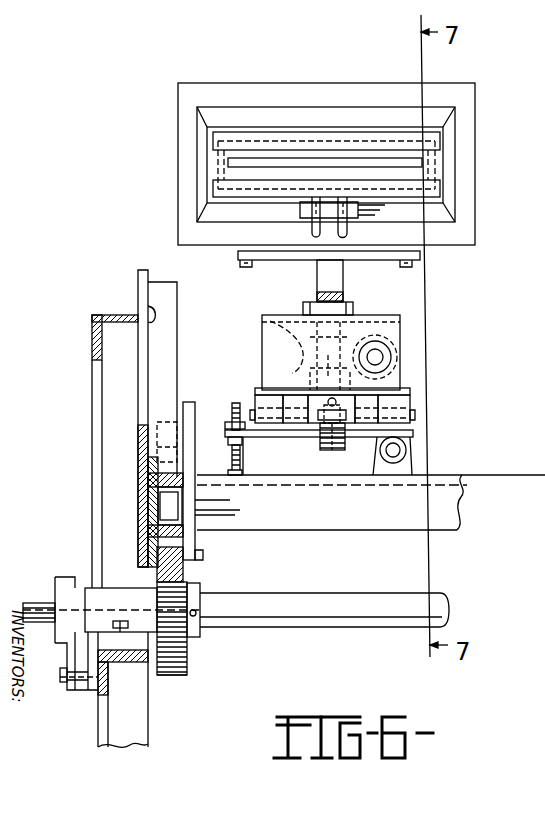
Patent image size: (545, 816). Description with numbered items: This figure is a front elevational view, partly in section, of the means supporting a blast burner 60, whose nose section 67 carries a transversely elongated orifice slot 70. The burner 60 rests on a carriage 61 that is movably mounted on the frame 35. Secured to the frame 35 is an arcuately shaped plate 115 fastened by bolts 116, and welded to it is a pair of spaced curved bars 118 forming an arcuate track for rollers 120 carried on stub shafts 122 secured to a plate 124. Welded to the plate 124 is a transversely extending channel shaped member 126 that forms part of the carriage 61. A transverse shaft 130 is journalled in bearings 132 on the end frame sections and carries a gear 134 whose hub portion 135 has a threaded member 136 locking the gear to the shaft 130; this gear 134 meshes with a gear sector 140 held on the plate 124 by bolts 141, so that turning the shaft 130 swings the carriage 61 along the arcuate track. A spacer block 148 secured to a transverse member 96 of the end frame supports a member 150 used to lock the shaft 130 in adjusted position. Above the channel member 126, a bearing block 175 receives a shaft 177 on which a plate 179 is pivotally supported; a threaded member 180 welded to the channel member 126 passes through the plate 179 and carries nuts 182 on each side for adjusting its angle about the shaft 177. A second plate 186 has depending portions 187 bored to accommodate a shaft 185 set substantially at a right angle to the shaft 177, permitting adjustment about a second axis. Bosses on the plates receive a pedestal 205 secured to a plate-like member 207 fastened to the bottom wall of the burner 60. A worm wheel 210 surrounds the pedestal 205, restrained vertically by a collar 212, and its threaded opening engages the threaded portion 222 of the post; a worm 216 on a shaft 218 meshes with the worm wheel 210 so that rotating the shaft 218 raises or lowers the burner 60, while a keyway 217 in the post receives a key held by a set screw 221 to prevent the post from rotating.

The frame 35 is at (88, 339).
The burner 60 is at (249, 82).
The carriage 61 is at (464, 506).
The nose section 67 is at (450, 134).
The slot 70 is at (423, 162).
The transverse member 96 is at (107, 690).
The arcuately shaped plate 115 is at (146, 283).
The bolt 116 is at (152, 311).
The arcuately shaped bar 118 is at (147, 372).
The roller 120 is at (170, 507).
The stub shaft 122 is at (197, 503).
The plate 124 is at (196, 415).
The channel shaped member 126 is at (357, 524).
The shaft 130 is at (306, 617).
The bearing 132 is at (88, 586).
The gear 134 is at (181, 672).
The hub portion 135 is at (201, 596).
The threaded member 136 is at (203, 617).
The gear sector 140 is at (188, 567).
The bolt 141 is at (204, 555).
The spacer block 148 is at (88, 690).
The member 150 is at (62, 660).
The bearing block 175 is at (412, 466).
The shaft 177 is at (401, 450).
The plate 179 is at (413, 433).
The threaded member 180 is at (233, 456).
The nut 182 is at (229, 440).
The shaft 185 is at (412, 417).
The second plate 186 is at (410, 392).
The depending portion 187 is at (264, 400).
The pedestal 205 is at (344, 275).
The plate-like member 207 is at (304, 262).
The worm wheel 210 is at (266, 319).
The collar 212 is at (360, 333).
The worm 216 is at (398, 340).
The keyway 217 is at (338, 451).
The shaft 218 is at (383, 355).
The set screw 221 is at (322, 412).
The threaded portion 222 is at (340, 297).